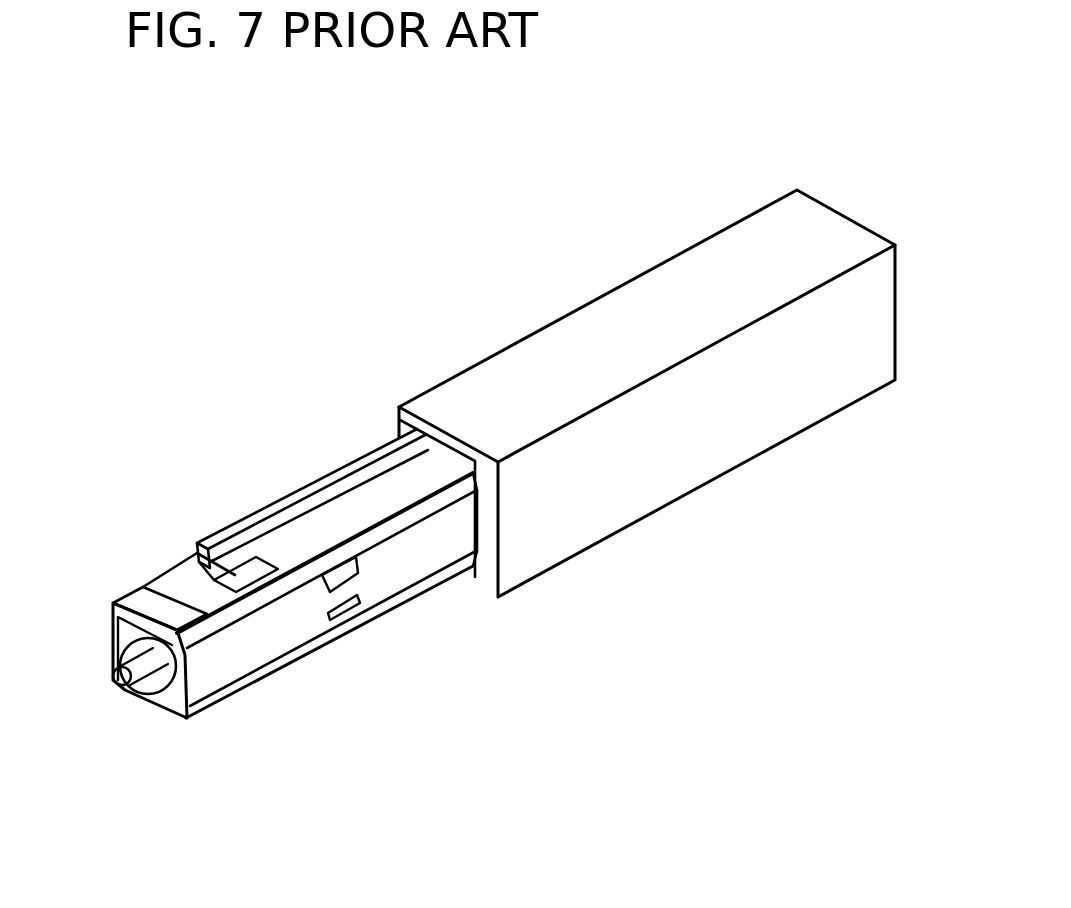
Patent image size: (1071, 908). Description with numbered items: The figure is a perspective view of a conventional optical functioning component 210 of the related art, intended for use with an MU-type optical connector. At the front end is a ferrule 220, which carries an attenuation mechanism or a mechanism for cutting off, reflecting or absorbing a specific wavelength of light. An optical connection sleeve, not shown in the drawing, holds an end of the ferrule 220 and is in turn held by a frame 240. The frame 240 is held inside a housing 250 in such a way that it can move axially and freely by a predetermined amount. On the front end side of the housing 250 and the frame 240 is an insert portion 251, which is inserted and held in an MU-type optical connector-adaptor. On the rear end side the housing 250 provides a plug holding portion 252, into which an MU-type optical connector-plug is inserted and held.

The optical functioning component 210 is at (528, 187).
The ferrule 220 is at (102, 695).
The frame 240 is at (230, 583).
The housing 250 is at (642, 490).
The insert portion 251 is at (170, 555).
The plug holding portion 252 is at (578, 355).